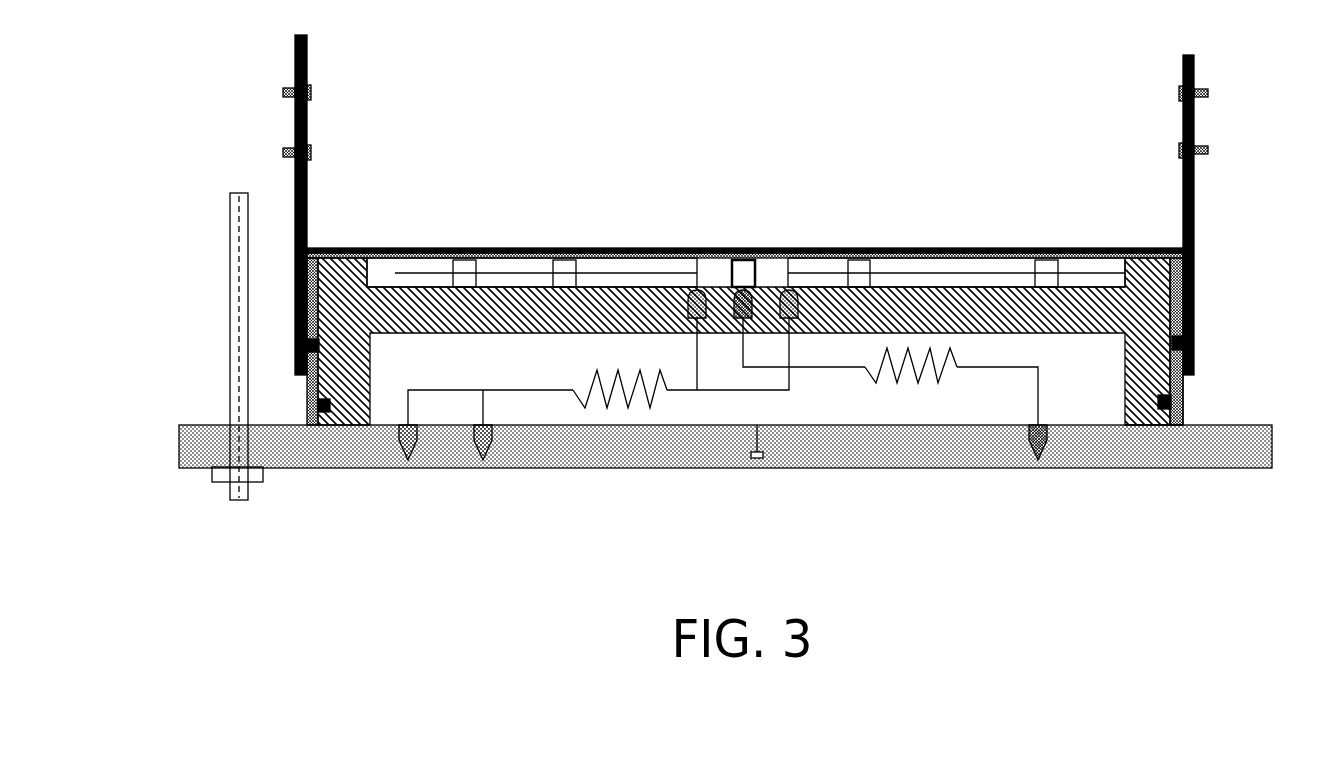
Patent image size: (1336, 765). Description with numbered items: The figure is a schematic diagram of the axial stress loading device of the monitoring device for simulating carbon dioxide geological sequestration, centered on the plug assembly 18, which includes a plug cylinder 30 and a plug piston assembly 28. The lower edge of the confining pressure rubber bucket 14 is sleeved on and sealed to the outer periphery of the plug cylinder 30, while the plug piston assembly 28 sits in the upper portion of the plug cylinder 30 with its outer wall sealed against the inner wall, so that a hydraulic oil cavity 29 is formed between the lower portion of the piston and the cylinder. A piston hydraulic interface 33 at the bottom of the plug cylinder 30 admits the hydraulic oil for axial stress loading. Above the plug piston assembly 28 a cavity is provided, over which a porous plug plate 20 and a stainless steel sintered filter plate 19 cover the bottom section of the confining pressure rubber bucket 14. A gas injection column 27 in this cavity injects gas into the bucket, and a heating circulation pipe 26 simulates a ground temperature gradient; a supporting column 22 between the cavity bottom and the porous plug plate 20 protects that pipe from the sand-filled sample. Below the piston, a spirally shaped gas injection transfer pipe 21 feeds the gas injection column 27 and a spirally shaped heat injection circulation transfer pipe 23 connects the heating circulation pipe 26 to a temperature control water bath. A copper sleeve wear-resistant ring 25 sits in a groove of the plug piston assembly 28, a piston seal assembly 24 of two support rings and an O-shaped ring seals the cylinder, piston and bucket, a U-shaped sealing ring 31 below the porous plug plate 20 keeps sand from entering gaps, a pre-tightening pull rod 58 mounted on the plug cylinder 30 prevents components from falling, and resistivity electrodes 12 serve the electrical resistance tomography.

The resistivity electrode 12 is at (290, 96).
The confining pressure rubber bucket 14 is at (1198, 122).
The plug assembly 18 is at (1190, 416).
The filter plate 19 is at (556, 246).
The porous plug plate 20 is at (1094, 250).
The gas injection transfer pipe 21 is at (898, 388).
The supporting column 22 is at (914, 252).
The heat injection circulation transfer pipe 23 is at (600, 400).
The piston seal assembly 24 is at (374, 375).
The copper sleeve wear-resistant ring 25 is at (1196, 383).
The heating circulation pipe 26 is at (501, 270).
The gas injection column 27 is at (770, 256).
The plug piston assembly 28 is at (1148, 434).
The hydraulic oil cavity 29 is at (980, 392).
The plug cylinder 30 is at (1078, 460).
The U-shaped sealing ring 31 is at (340, 250).
The piston hydraulic interface 33 is at (759, 462).
The pre-tightening pull rod 58 is at (226, 338).